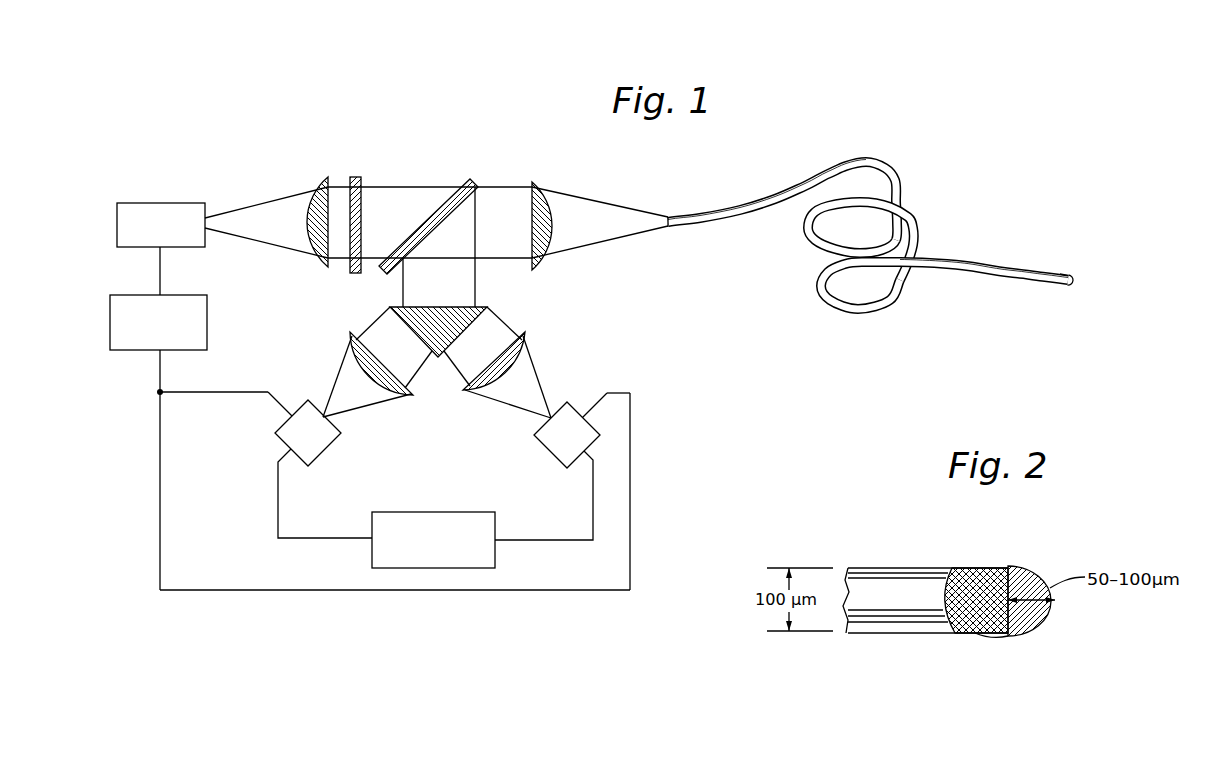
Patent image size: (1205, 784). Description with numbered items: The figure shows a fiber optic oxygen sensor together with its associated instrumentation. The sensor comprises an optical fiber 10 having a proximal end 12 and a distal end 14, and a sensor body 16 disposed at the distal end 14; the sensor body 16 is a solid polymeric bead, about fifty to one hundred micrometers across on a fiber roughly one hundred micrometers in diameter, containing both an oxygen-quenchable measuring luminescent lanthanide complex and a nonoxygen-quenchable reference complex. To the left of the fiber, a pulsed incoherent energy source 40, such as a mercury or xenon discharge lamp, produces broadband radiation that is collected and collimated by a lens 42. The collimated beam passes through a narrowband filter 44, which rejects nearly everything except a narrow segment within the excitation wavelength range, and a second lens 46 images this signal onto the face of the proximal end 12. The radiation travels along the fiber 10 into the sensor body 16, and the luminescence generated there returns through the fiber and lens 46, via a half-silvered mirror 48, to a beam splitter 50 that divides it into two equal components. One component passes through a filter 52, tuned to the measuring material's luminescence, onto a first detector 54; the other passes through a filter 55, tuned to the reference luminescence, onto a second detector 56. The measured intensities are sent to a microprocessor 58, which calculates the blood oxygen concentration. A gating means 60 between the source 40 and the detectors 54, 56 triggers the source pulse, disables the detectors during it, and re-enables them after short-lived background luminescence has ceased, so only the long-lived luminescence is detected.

In FIG. 1, the optical fiber 10 is at (746, 203).
In FIG. 2, the optical fiber 10 is at (887, 566).
In FIG. 1, the proximal end 12 is at (669, 215).
In FIG. 1, the distal end 14 is at (1069, 274).
In FIG. 1, the sensor body 16 is at (1079, 279).
In FIG. 2, the sensor body 16 is at (1031, 566).
In FIG. 1, the pulsed incoherent energy source 40 is at (160, 203).
In FIG. 1, the lens 42 is at (323, 184).
In FIG. 1, the narrowband filter 44 is at (358, 177).
In FIG. 1, the second lens 46 is at (538, 182).
In FIG. 1, the half-silvered mirror 48 is at (470, 182).
In FIG. 1, the beam splitter 50 is at (487, 307).
In FIG. 1, the filter 52 is at (403, 394).
In FIG. 1, the first detector 54 is at (330, 451).
In FIG. 1, the filter 55 is at (473, 390).
In FIG. 1, the second detector 56 is at (548, 457).
In FIG. 1, the microprocessor 58 is at (480, 512).
In FIG. 1, the gating means 60 is at (207, 314).